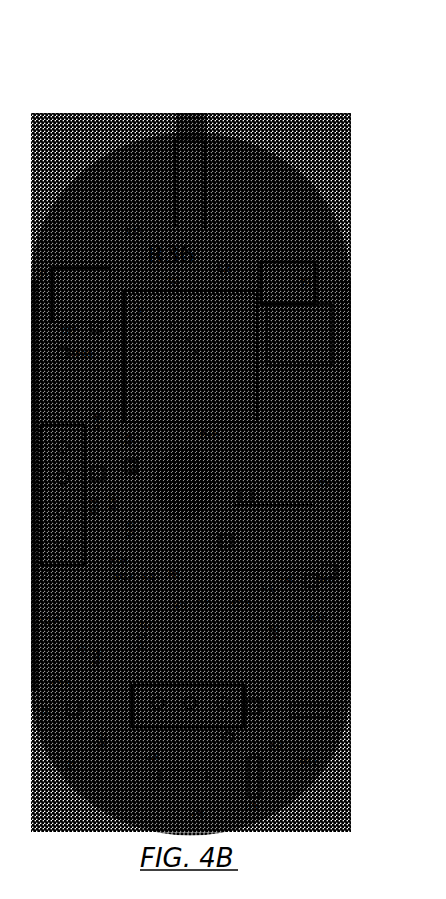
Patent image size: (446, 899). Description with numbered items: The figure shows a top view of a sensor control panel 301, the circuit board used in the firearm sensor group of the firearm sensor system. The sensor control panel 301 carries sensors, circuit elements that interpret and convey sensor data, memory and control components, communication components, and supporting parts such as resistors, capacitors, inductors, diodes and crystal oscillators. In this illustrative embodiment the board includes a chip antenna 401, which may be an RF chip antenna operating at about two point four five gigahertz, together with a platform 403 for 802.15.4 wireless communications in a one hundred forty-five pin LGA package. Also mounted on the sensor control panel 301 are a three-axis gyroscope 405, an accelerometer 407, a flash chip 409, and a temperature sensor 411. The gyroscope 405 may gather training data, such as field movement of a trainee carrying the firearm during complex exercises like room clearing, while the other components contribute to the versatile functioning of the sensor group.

The sensor control panel 301 is at (315, 80).
The chip antenna 401 is at (205, 194).
The platform for 802.15.4 145-LGA wireless communications 403 is at (202, 397).
The three-axis gyroscope 405 is at (186, 658).
The accelerometer 407 is at (322, 453).
The flash chip 409 is at (289, 551).
The temperature sensor 411 is at (111, 601).